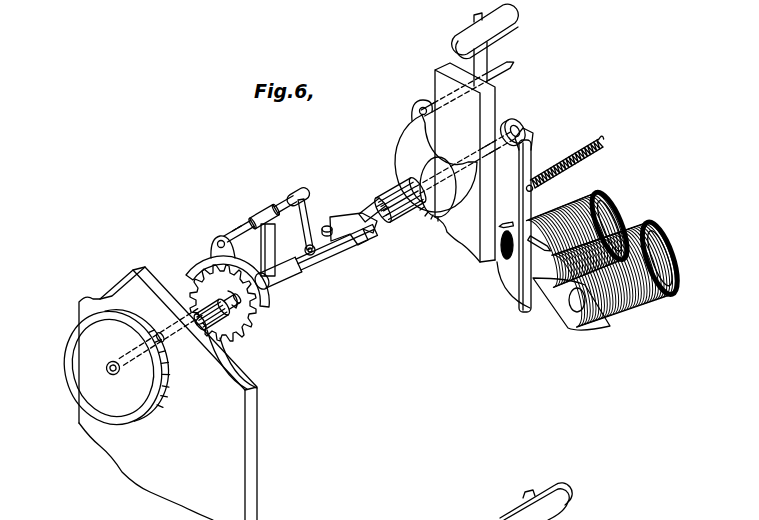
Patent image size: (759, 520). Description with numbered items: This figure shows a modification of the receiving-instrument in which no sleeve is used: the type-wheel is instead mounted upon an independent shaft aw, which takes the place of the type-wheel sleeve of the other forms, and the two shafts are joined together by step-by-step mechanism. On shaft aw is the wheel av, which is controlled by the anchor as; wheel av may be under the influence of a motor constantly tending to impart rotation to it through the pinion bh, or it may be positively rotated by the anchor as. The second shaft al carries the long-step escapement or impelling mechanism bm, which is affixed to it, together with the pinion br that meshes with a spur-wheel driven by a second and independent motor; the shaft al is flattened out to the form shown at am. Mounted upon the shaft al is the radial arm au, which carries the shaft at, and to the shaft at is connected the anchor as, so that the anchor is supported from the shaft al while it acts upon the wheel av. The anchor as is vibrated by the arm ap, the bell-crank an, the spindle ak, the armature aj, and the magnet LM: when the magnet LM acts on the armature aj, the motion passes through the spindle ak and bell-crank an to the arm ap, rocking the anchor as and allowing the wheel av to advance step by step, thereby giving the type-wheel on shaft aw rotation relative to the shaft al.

The shaft aw is at (108, 370).
The wheel av is at (245, 327).
The pinion bh is at (213, 305).
The anchor as is at (204, 262).
The shaft at is at (281, 203).
The radial arm au is at (266, 240).
The arm ap is at (308, 217).
The bell-crank an is at (330, 226).
The shaft al is at (283, 281).
The flattened portion of shaft am is at (327, 257).
The spindle ak is at (364, 236).
The pinion br is at (381, 184).
The long step escapement or impelling mechanism bm is at (438, 208).
The armature aj is at (528, 158).
The magnet LM is at (593, 257).